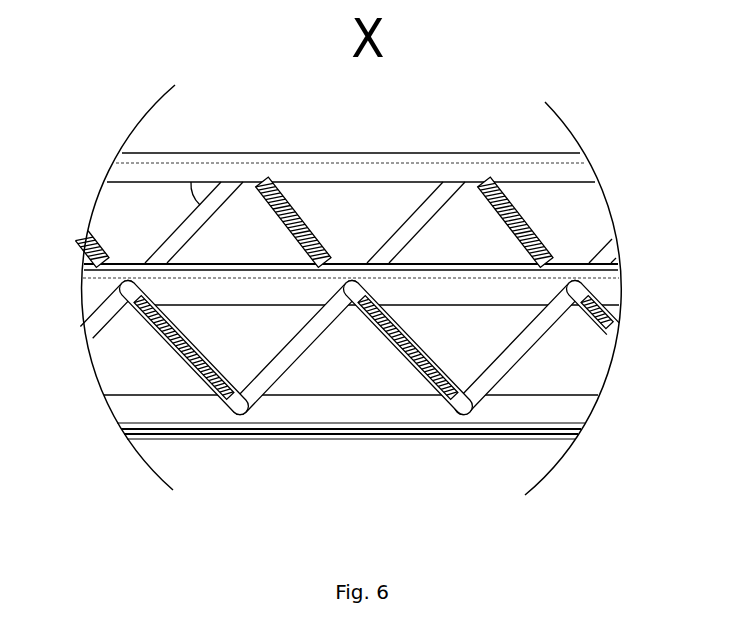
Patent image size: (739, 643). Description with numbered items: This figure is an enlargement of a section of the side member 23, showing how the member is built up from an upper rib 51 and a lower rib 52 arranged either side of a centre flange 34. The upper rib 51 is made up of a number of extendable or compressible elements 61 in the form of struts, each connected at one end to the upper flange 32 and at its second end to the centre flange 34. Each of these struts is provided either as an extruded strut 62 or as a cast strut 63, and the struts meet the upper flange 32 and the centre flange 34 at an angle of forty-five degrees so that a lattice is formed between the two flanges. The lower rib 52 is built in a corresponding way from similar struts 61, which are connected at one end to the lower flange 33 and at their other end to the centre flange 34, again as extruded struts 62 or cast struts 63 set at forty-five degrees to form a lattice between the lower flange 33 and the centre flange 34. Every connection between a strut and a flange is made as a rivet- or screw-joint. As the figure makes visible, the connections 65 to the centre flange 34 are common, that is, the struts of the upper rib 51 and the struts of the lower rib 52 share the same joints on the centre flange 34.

The side member 23 is at (374, 257).
The upper flange 32 is at (351, 138).
The lower flange 33 is at (351, 453).
The centre flange 34 is at (318, 275).
The upper rib 51 is at (380, 277).
The lower rib 52 is at (321, 390).
The extendable or compressible elements 61 is at (645, 261).
The extruded strut 62 is at (386, 260).
The cast strut 63 is at (378, 278).
The connections 65 is at (352, 390).